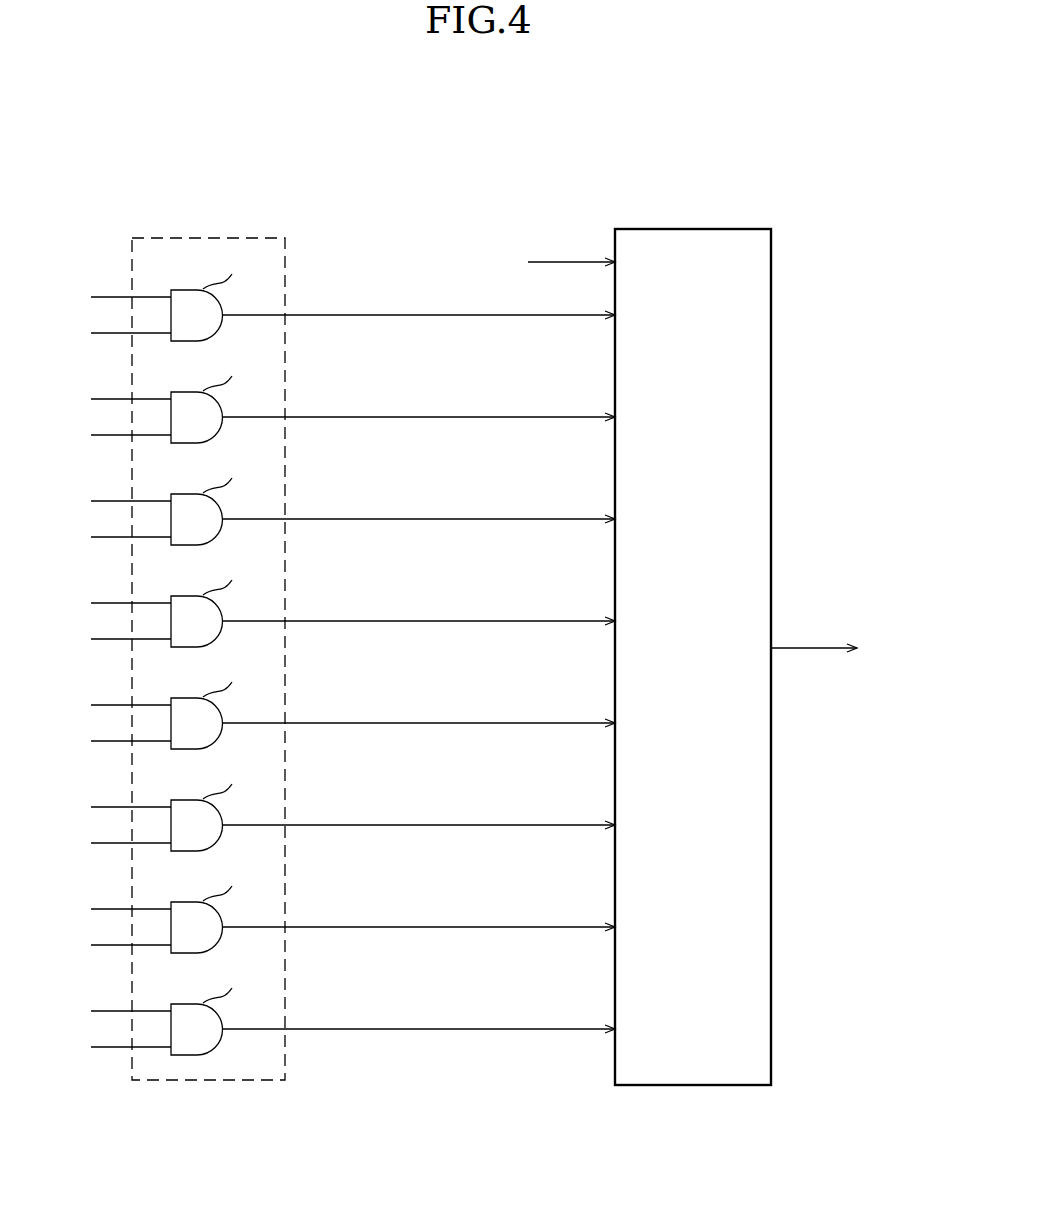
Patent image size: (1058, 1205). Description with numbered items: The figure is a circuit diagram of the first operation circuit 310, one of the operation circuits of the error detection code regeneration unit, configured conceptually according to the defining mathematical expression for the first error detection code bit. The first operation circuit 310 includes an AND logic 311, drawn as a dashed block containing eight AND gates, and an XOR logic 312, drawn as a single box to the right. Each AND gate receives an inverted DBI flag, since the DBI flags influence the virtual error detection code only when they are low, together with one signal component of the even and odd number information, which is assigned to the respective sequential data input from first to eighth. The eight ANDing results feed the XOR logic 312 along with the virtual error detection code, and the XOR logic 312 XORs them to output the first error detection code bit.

The first operation circuit 310 is at (862, 113).
The AND logic 311 is at (243, 237).
The XOR logic 312 is at (734, 228).